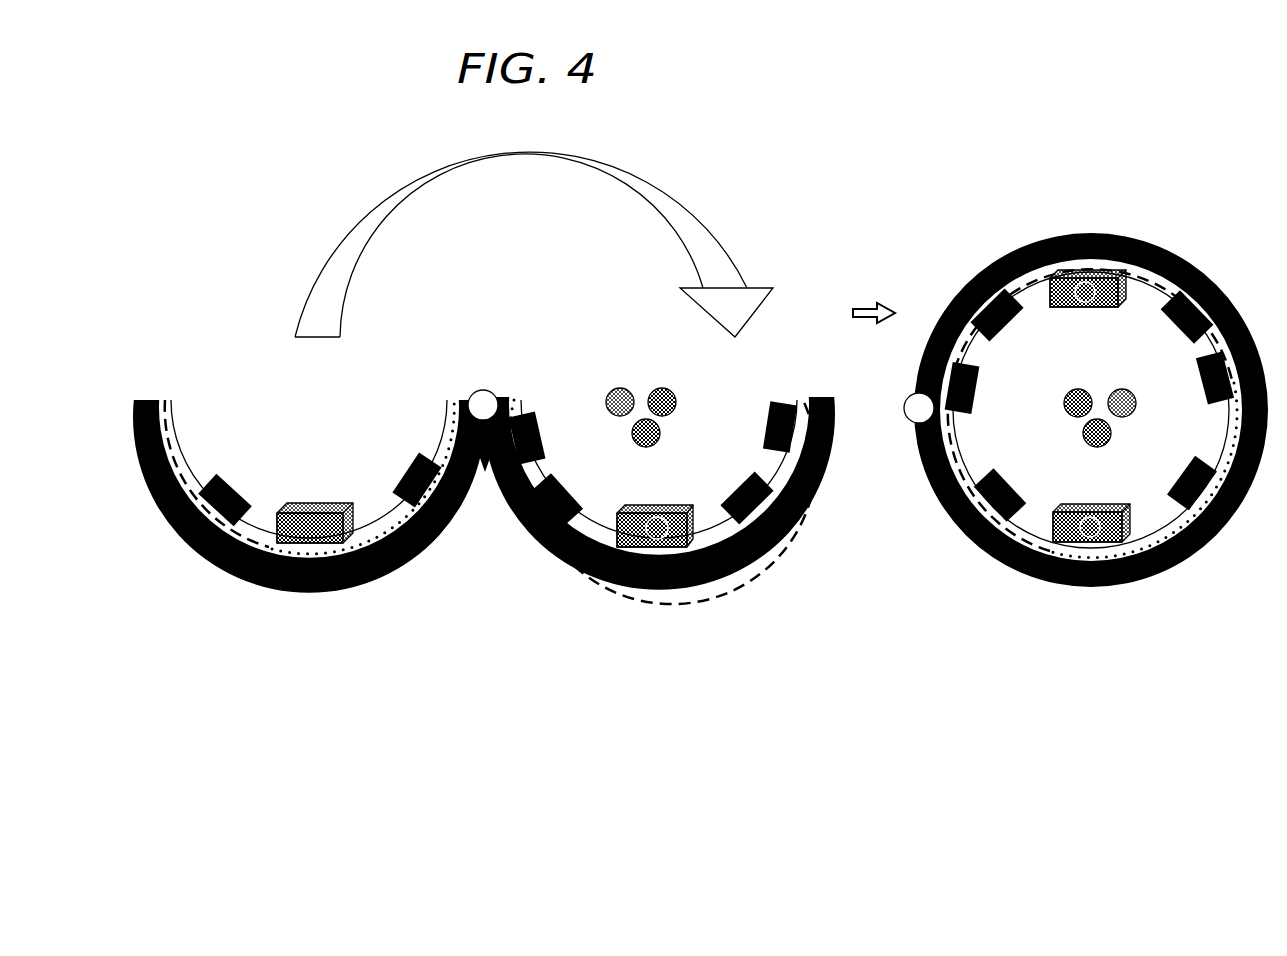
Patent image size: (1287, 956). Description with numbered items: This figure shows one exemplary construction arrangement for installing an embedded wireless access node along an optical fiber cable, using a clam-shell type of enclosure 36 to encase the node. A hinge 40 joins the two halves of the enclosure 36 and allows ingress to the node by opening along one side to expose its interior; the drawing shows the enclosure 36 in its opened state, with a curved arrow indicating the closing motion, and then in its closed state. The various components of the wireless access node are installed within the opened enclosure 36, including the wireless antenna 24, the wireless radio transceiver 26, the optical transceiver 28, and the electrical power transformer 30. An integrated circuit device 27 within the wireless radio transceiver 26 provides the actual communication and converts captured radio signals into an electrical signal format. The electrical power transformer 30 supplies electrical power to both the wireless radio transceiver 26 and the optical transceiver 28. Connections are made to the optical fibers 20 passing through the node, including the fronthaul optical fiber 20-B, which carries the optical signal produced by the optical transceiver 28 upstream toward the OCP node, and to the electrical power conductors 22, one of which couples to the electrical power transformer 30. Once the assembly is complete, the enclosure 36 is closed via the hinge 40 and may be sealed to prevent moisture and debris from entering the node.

The optical fibers 20 is at (669, 396).
The electrical power conductors 22 is at (608, 403).
The fronthaul optical fiber 20-B is at (642, 440).
The wireless antenna 24 is at (238, 534).
The wireless radio transceiver 26 is at (575, 534).
The integrated circuit device 27 is at (233, 487).
The optical transceiver 28 is at (312, 505).
The electrical power transformer 30 is at (676, 508).
The clam-shell enclosure 36 is at (634, 582).
The hinge 40 is at (472, 403).